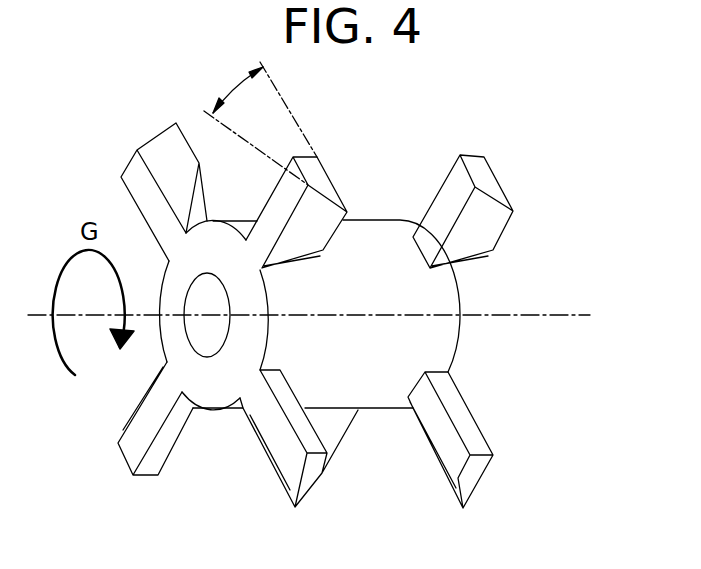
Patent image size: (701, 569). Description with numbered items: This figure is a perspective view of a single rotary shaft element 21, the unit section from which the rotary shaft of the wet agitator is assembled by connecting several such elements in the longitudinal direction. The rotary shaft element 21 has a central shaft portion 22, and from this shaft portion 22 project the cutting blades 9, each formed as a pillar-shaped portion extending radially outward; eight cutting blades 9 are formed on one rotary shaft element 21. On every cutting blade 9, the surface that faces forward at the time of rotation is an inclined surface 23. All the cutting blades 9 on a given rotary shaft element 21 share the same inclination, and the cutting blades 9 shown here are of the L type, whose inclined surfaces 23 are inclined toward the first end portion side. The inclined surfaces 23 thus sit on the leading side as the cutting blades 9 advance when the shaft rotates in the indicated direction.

The rotary shaft element 21 is at (518, 117).
The shaft portion 22 is at (388, 227).
The inclined surface 23 is at (295, 242).
The cutting blade 9 is at (457, 497).